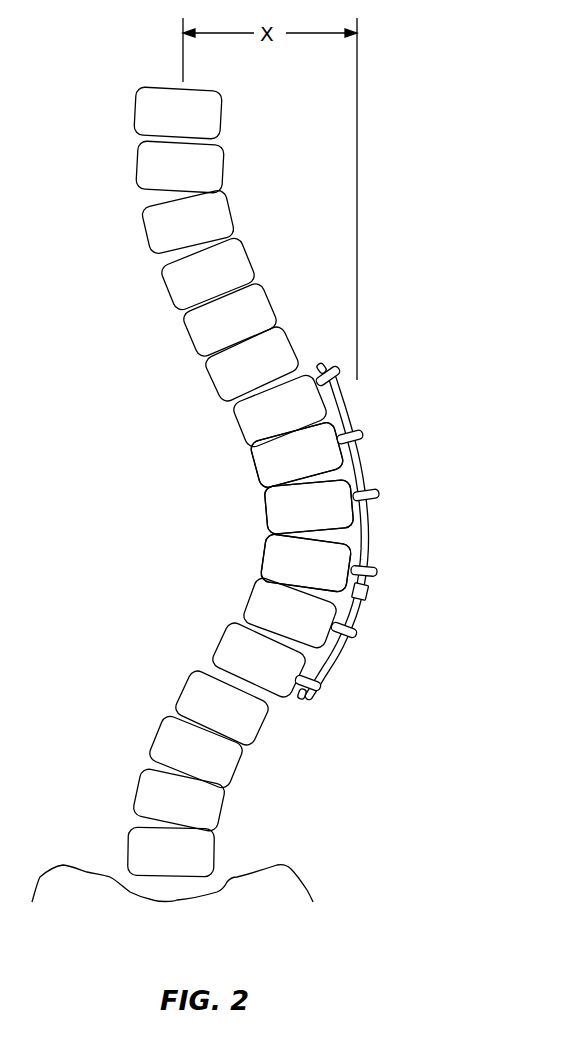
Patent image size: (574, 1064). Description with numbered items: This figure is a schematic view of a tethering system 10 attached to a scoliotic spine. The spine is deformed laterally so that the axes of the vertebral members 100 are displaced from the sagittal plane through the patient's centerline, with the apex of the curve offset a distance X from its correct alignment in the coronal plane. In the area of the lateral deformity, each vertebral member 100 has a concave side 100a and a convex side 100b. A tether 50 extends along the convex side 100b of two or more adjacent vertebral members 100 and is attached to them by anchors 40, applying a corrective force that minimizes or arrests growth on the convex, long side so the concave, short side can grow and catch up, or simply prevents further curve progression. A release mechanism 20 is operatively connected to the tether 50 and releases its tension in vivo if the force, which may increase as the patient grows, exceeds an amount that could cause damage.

The tethering system 10 is at (384, 478).
The release mechanism 20 is at (368, 589).
The anchors 40 is at (360, 428).
The tether 50 is at (348, 403).
The vertebral members 100 is at (170, 227).
The concave side 100a is at (258, 470).
The convex side 100b is at (355, 446).